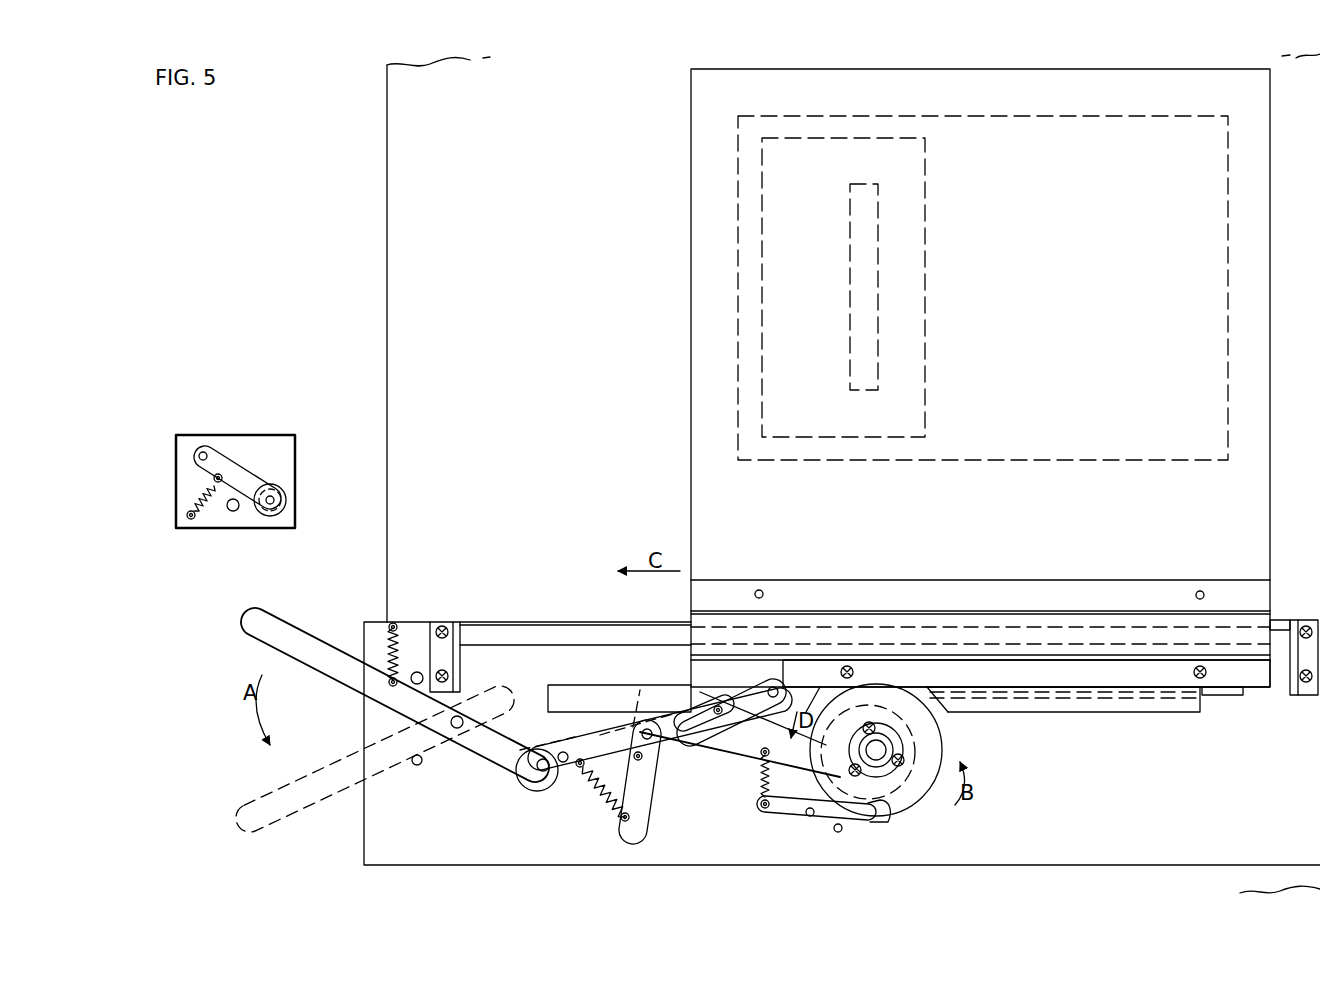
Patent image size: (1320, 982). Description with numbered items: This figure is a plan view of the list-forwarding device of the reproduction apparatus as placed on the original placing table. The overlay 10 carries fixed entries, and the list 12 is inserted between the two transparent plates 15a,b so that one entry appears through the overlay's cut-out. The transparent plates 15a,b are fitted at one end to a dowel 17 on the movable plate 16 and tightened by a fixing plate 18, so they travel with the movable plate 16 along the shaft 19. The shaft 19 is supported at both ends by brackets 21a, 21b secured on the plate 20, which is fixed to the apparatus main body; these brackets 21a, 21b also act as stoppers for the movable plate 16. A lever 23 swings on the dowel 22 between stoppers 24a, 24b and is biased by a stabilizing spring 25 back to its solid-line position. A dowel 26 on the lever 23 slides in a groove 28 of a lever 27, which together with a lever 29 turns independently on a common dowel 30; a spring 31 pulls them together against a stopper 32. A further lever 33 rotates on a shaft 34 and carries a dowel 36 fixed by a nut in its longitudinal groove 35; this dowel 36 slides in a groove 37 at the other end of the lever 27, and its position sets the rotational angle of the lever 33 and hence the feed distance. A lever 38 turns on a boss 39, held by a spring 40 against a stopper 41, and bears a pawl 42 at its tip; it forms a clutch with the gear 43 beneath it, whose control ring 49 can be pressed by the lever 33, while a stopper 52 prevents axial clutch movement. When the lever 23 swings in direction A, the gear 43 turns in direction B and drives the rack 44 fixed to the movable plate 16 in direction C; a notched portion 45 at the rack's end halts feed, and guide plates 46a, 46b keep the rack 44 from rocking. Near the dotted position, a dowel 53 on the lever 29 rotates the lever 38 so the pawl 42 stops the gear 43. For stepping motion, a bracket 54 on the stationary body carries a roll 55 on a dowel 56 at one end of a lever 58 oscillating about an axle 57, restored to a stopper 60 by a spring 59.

The overlay 10 is at (905, 233).
The list 12 is at (1148, 432).
The transparent plates 15a,b is at (705, 468).
The movable plate 16 is at (840, 630).
The dowel 17 is at (759, 590).
The fixing plate 18 is at (718, 592).
The shaft 19 is at (483, 622).
The plate 20 is at (374, 845).
The bracket 21a is at (1298, 695).
The bracket 21b is at (448, 660).
The dowel 22 is at (457, 728).
The lever 23 is at (290, 622).
The stopper 24a is at (413, 684).
The stopper 24b is at (417, 766).
The stabilizing spring 25 is at (395, 628).
The dowel 26 is at (543, 771).
The lever 27 is at (697, 742).
The groove 28 is at (560, 752).
The lever 29 is at (640, 803).
The dowel 30 is at (650, 740).
The spring 31 is at (608, 792).
The stopper 32 is at (628, 752).
The lever 33 is at (786, 748).
The shaft 34 is at (890, 740).
The groove 35 is at (763, 756).
The dowel 36 is at (718, 715).
The groove 37 is at (680, 715).
The lever 38 is at (775, 812).
The boss 39 is at (810, 816).
The spring 40 is at (760, 804).
The stopper 41 is at (842, 830).
The pawl 42 is at (888, 803).
The gear 43 is at (940, 752).
The rack 44 is at (1103, 688).
The notched portion 45 is at (1246, 695).
The guide plate 46a is at (1168, 712).
The guide plate 46b is at (576, 695).
The control ring 49 is at (915, 790).
The stopper 52 is at (876, 745).
The dowel 53 is at (770, 688).
The bracket 54 is at (274, 450).
The roll 55 is at (272, 492).
The dowel 56 is at (276, 500).
The axle 57 is at (203, 452).
The lever 58 is at (220, 472).
The spring 59 is at (198, 497).
The stopper 60 is at (233, 511).